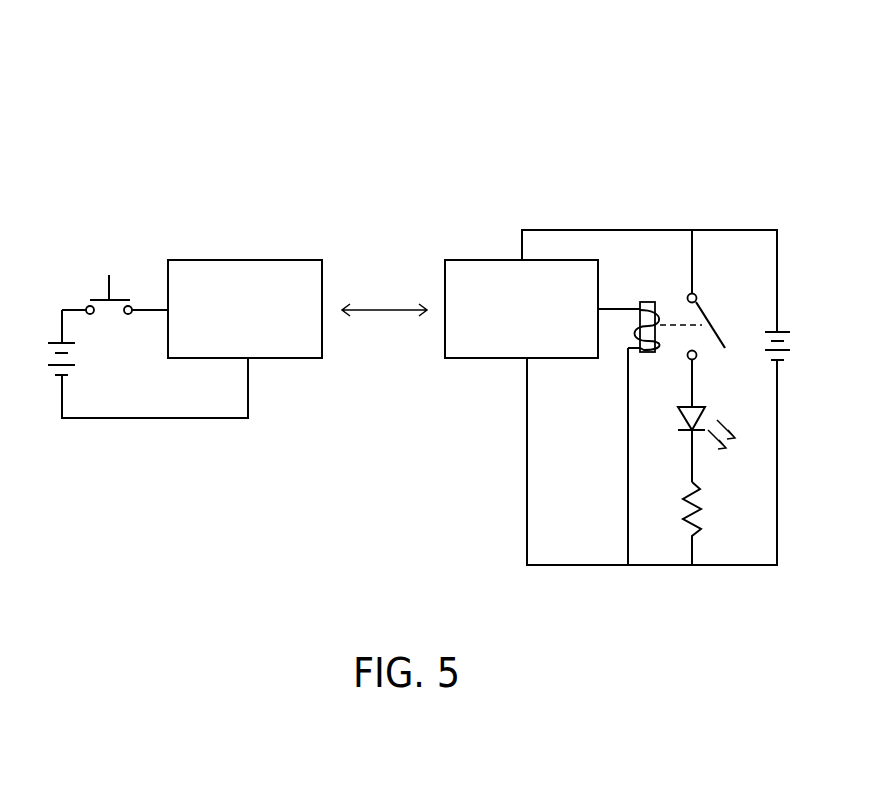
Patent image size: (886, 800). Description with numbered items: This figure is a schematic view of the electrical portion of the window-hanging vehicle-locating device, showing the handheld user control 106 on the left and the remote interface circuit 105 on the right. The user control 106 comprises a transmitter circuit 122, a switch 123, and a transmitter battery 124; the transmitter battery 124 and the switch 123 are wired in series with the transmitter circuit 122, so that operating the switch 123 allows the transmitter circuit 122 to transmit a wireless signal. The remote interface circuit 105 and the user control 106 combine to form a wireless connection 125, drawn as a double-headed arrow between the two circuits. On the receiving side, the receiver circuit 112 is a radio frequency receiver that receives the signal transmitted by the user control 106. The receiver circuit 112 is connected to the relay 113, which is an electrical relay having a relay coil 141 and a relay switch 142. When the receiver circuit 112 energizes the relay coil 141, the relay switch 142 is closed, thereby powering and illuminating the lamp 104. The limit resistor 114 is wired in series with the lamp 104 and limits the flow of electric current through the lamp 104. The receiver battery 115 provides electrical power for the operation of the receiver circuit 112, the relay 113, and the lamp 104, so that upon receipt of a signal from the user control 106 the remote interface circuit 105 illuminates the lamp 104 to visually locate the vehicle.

The lamp 104 is at (743, 418).
The remote interface circuit 105 is at (758, 97).
The user control 106 is at (130, 152).
The receiver circuit 112 is at (473, 260).
The relay 113 is at (700, 290).
The limit resistor 114 is at (705, 507).
The receiver battery 115 is at (795, 348).
The transmitter circuit 122 is at (260, 260).
The switch 123 is at (103, 290).
The transmitter battery 124 is at (47, 360).
The wireless connection 125 is at (378, 312).
The relay coil 141 is at (650, 302).
The relay switch 142 is at (715, 315).